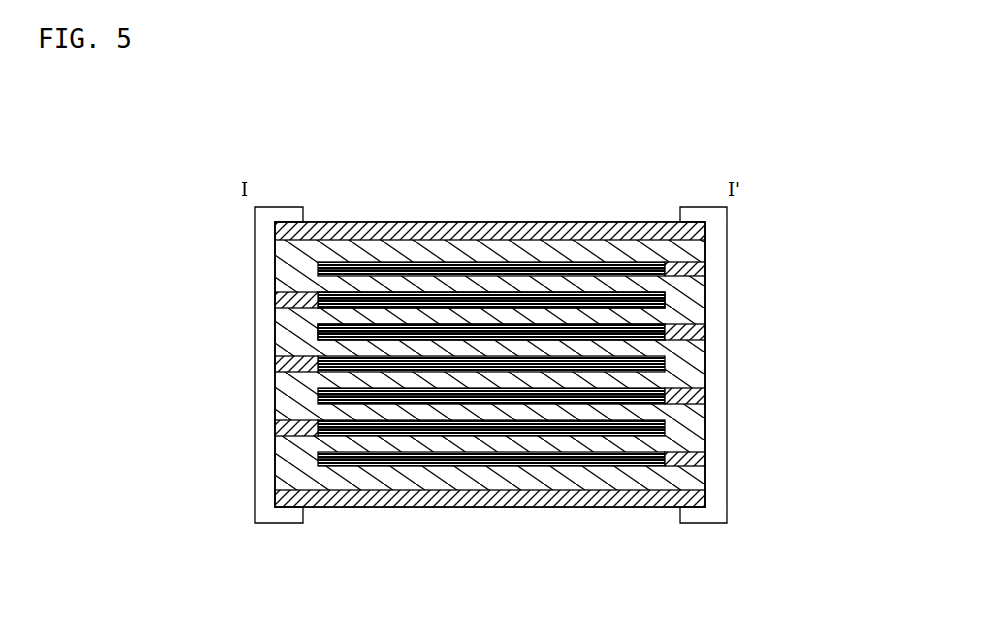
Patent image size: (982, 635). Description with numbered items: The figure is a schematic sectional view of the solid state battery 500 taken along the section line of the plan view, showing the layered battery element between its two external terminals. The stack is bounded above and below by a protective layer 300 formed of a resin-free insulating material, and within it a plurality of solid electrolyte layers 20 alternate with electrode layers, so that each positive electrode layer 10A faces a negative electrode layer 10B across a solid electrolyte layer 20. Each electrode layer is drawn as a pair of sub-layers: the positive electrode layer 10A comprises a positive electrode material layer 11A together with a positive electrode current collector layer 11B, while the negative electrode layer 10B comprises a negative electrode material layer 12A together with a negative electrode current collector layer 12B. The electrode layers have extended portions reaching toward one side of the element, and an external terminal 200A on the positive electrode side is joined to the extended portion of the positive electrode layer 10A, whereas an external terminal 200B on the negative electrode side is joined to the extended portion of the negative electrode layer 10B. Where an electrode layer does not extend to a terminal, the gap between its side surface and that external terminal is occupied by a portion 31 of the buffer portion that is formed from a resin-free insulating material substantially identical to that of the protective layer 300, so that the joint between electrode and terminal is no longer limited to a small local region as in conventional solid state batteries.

The solid state battery 500 is at (777, 189).
The solid electrolyte layer 20 is at (414, 243).
The protective layer 300 is at (473, 223).
The positive electrode layer 10A is at (688, 164).
The positive electrode material layer 11A is at (590, 296).
The negative electrode material layer 12A is at (648, 291).
The negative electrode layer 10B is at (465, 549).
The positive electrode current collector layer 11B is at (372, 345).
The negative electrode current collector layer 12B is at (419, 336).
The portion formed from resin-free insulating material 31 is at (280, 292).
The external terminal on positive electrode side 200A is at (717, 306).
The external terminal on negative electrode side 200B is at (265, 349).